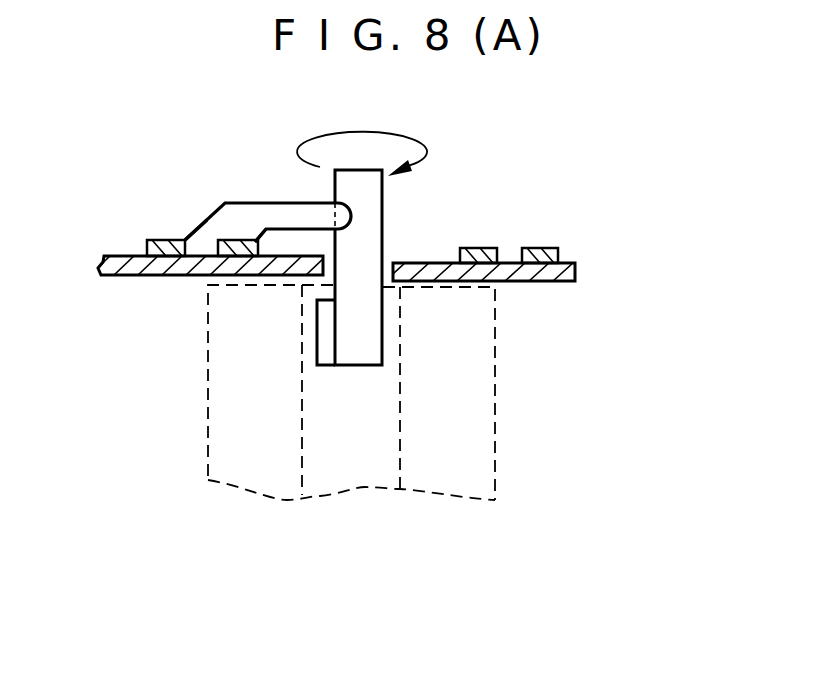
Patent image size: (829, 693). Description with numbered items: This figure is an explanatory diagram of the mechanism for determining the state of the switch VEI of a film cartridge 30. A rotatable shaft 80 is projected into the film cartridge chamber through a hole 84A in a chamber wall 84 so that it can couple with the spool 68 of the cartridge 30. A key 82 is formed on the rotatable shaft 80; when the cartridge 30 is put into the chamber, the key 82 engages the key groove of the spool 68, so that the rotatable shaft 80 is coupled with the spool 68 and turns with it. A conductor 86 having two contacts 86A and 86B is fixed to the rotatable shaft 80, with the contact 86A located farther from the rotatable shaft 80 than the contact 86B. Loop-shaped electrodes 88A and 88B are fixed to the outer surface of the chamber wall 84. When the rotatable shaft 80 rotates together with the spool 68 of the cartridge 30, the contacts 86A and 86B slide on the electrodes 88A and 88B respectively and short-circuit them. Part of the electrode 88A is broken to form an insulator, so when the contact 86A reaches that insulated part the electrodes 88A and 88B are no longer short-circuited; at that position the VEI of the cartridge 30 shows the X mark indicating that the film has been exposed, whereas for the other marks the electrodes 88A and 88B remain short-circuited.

The cartridge 30 is at (502, 428).
The spool 68 is at (367, 450).
The rotatable shaft 80 is at (375, 225).
The key 82 is at (317, 333).
The chamber wall 84 is at (550, 283).
The hole 84A is at (387, 267).
The conductor 86 is at (253, 203).
The contact 86A is at (155, 242).
The contact 86B is at (223, 242).
The electrode 88A is at (160, 252).
The electrode 88B is at (232, 257).